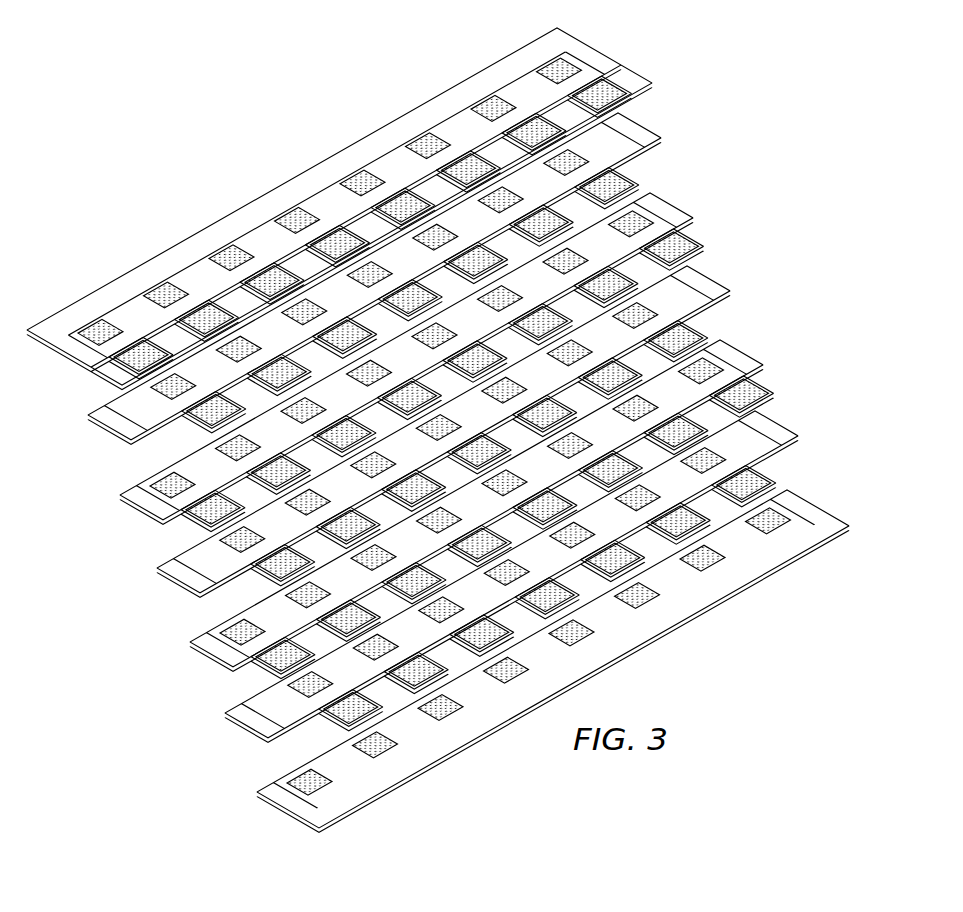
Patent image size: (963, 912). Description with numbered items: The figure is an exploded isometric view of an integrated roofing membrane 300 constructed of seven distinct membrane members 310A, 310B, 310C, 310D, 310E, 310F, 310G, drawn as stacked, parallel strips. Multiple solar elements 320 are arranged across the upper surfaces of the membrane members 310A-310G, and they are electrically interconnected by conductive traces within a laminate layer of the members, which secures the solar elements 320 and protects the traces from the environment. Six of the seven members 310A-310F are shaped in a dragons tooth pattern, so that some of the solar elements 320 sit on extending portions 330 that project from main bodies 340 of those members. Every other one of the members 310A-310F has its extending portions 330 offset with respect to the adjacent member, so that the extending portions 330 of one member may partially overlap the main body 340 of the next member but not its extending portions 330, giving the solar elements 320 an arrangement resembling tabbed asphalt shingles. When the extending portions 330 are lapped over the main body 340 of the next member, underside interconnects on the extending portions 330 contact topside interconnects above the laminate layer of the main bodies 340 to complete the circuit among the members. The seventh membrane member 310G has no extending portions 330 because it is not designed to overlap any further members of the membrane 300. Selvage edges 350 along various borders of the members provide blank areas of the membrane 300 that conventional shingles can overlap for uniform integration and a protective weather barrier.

The integrated roofing membrane 300 is at (270, 116).
The membrane member 310A is at (74, 362).
The membrane member 310B is at (107, 433).
The membrane member 310C is at (142, 513).
The membrane member 310D is at (175, 586).
The membrane member 310E is at (212, 662).
The membrane member 310F is at (242, 732).
The membrane member 310G is at (433, 767).
The solar element 320 is at (435, 148).
The extending portion 330 is at (631, 61).
The main body 340 is at (594, 41).
The selvage edge 350 is at (312, 833).